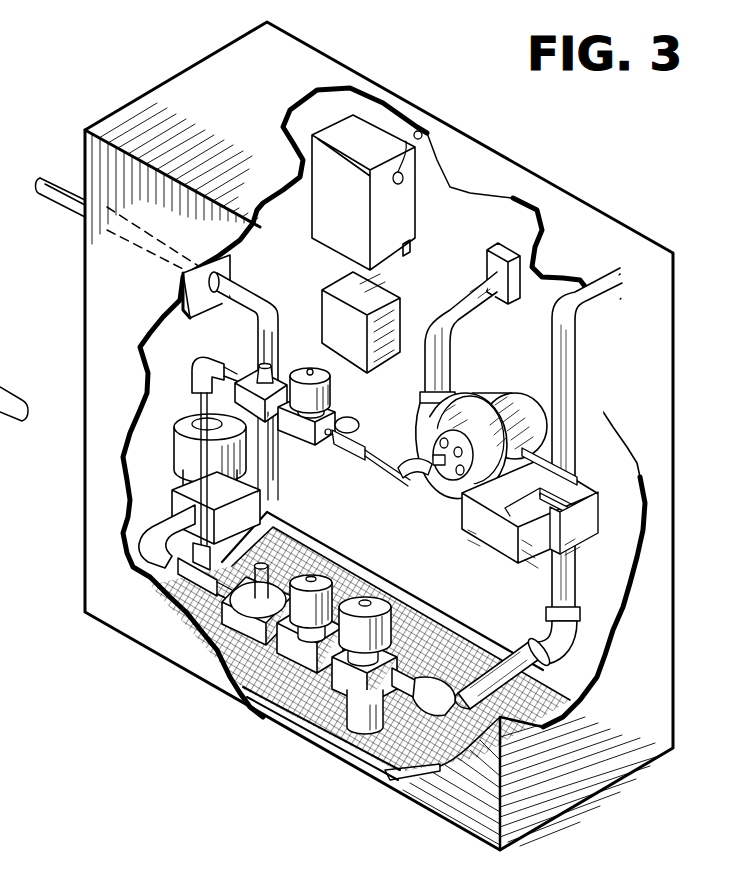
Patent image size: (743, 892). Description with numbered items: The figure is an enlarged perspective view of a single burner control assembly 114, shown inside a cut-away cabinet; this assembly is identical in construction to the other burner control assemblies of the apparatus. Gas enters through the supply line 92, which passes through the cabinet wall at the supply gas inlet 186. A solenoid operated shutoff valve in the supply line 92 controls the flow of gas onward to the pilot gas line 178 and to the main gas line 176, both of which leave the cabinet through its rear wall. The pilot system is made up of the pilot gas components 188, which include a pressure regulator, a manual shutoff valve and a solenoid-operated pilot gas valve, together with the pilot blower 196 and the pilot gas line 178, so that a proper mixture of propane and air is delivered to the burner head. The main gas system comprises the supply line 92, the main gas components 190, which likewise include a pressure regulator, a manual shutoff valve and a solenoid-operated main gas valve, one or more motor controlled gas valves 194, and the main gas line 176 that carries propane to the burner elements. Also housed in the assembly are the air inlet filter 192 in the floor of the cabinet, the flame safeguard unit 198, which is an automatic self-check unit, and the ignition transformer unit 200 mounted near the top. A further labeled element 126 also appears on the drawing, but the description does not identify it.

The supply line 92 is at (72, 207).
The burner control assembly 114 is at (577, 181).
The cover 126 is at (507, 100).
The main gas line 176 is at (560, 348).
The pilot gas line 178 is at (463, 293).
The supply gas inlet 186 is at (192, 292).
The pilot gas components 188 is at (247, 352).
The main gas components 190 is at (344, 680).
The air inlet filter 192 is at (425, 640).
The motor controlled gas valves 194 is at (570, 483).
The pilot blower 196 is at (505, 418).
The flame safeguard unit 198 is at (362, 346).
The ignition transformer unit 200 is at (372, 132).